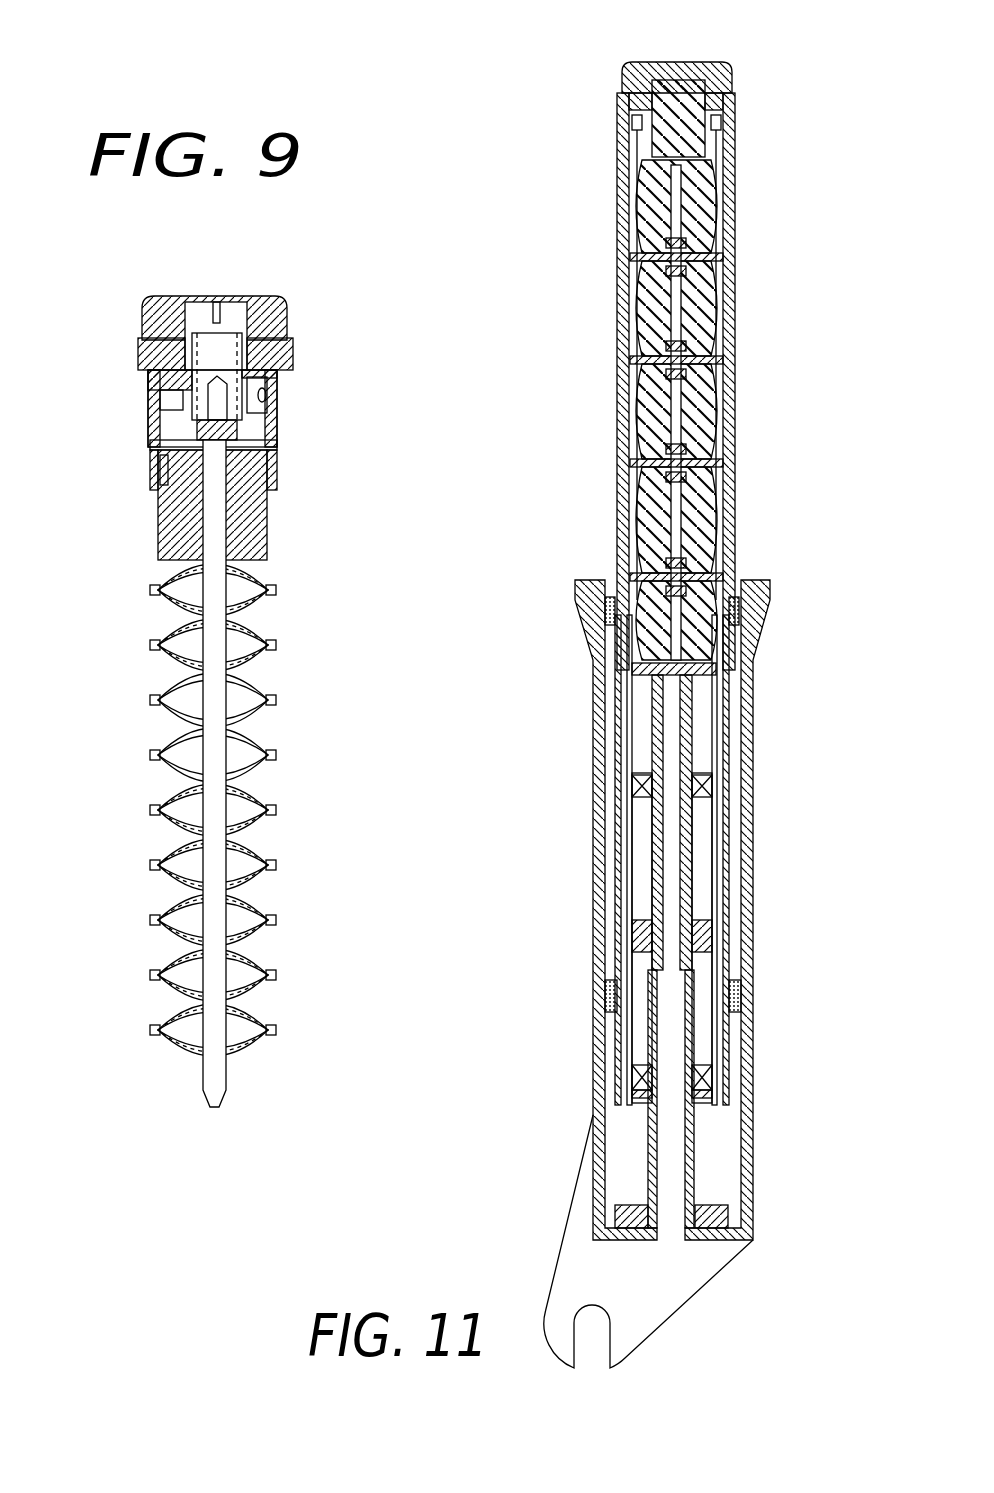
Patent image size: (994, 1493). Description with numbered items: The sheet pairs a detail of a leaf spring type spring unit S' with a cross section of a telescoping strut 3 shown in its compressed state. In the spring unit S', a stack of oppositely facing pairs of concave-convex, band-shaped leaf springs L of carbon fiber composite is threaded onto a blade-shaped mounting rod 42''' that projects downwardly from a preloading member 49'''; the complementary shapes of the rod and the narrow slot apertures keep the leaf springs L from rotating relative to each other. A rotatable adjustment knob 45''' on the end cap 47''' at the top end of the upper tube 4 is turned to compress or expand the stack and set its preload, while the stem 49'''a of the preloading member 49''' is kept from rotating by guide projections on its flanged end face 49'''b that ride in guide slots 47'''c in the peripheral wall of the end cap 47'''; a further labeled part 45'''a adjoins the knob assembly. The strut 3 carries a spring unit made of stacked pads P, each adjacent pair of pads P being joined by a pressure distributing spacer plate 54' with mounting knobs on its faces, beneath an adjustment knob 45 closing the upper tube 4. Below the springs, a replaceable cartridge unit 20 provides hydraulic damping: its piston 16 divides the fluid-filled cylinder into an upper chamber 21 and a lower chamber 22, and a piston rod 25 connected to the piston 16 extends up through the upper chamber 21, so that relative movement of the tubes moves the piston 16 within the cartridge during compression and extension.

In FIG. 9, the adjustment knob 45''' is at (202, 298).
In FIG. 9, the end cap 47''' is at (179, 375).
In FIG. 9, the guide slots 47'''c is at (115, 421).
In FIG. 9, the cap lug 45'''a is at (331, 402).
In FIG. 9, the stem 49'''a is at (163, 483).
In FIG. 9, the preloading member 49''' is at (270, 523).
In FIG. 9, the flanged end face 49'''b is at (111, 547).
In FIG. 9, the leaf spring type spring unit S' is at (178, 810).
In FIG. 9, the leaf springs L is at (281, 708).
In FIG. 9, the mounting rod 42''' is at (269, 797).
In FIG. 11, the cap 45 is at (720, 53).
In FIG. 11, the upper tube 4 is at (617, 284).
In FIG. 11, the pressure distributing spacer plate 54' is at (631, 417).
In FIG. 11, the pads P is at (640, 510).
In FIG. 11, the replaceable cartridge unit 20 is at (641, 770).
In FIG. 11, the piston rod 25 is at (693, 720).
In FIG. 11, the telescoping strut 3 is at (758, 800).
In FIG. 11, the upper chamber 21 is at (640, 840).
In FIG. 11, the piston 16 is at (705, 925).
In FIG. 11, the lower chamber 22 is at (640, 990).